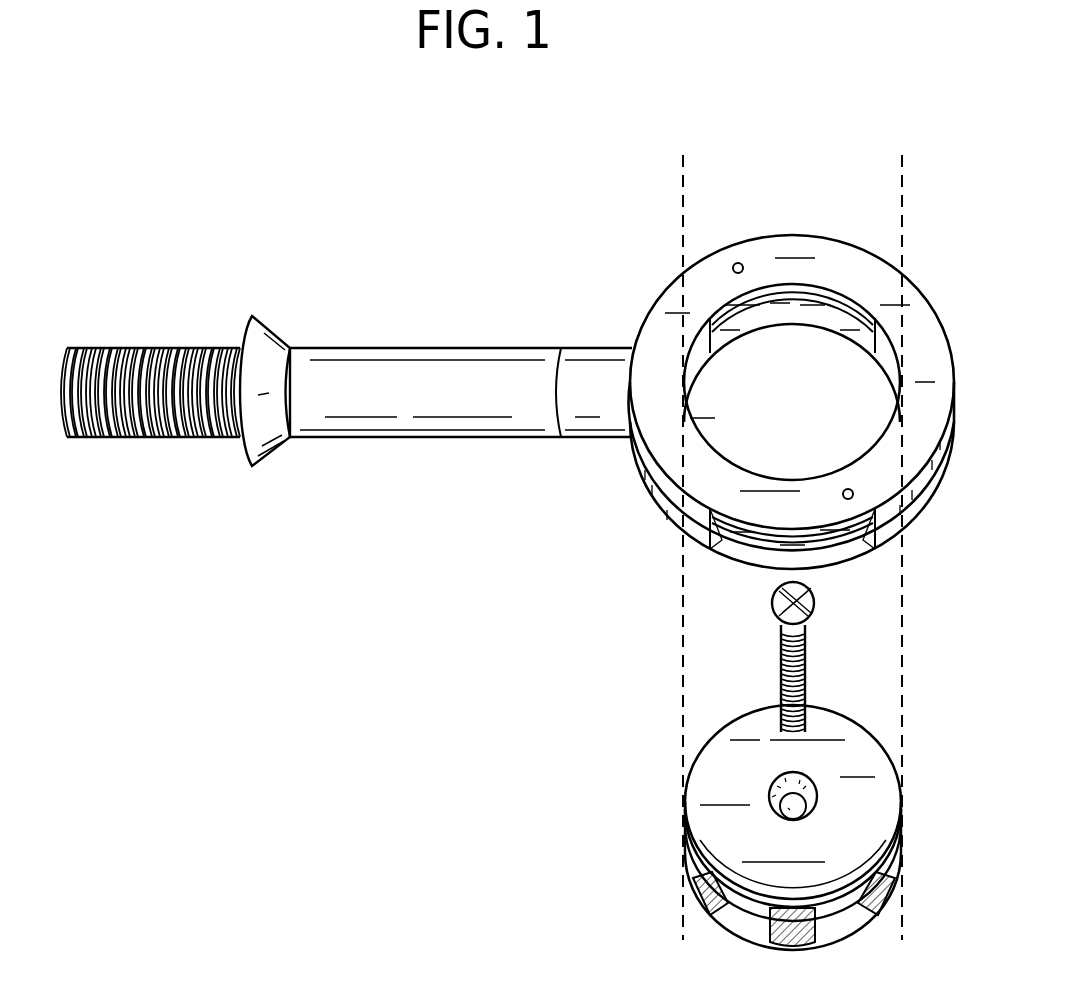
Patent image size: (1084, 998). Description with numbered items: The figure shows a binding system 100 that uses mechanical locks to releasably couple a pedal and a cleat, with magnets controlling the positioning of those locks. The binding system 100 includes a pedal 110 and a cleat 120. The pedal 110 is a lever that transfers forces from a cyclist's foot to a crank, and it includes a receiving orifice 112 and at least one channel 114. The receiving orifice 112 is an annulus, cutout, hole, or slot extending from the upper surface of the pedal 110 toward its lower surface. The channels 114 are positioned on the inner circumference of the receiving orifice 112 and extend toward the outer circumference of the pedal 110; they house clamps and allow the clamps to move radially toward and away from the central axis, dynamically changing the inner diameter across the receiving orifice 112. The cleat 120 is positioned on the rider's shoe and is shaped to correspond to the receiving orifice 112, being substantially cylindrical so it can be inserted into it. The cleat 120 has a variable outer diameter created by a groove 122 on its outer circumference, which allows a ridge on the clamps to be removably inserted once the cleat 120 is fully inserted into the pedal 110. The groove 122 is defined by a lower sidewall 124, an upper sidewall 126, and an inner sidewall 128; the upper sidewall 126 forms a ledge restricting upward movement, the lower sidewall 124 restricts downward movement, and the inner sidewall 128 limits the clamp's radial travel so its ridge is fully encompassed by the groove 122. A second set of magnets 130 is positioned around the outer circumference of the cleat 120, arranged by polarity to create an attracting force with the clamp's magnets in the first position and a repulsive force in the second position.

The binding system 100 is at (405, 232).
The pedal 110 is at (663, 340).
The receiving orifice 112 is at (880, 333).
The channel 114 is at (735, 408).
The cleat 120 is at (700, 797).
The groove 122 is at (748, 918).
The lower sidewall 124 is at (830, 925).
The upper sidewall 126 is at (900, 846).
The inner sidewall 128 is at (858, 922).
The second set of magnets 130 is at (700, 897).